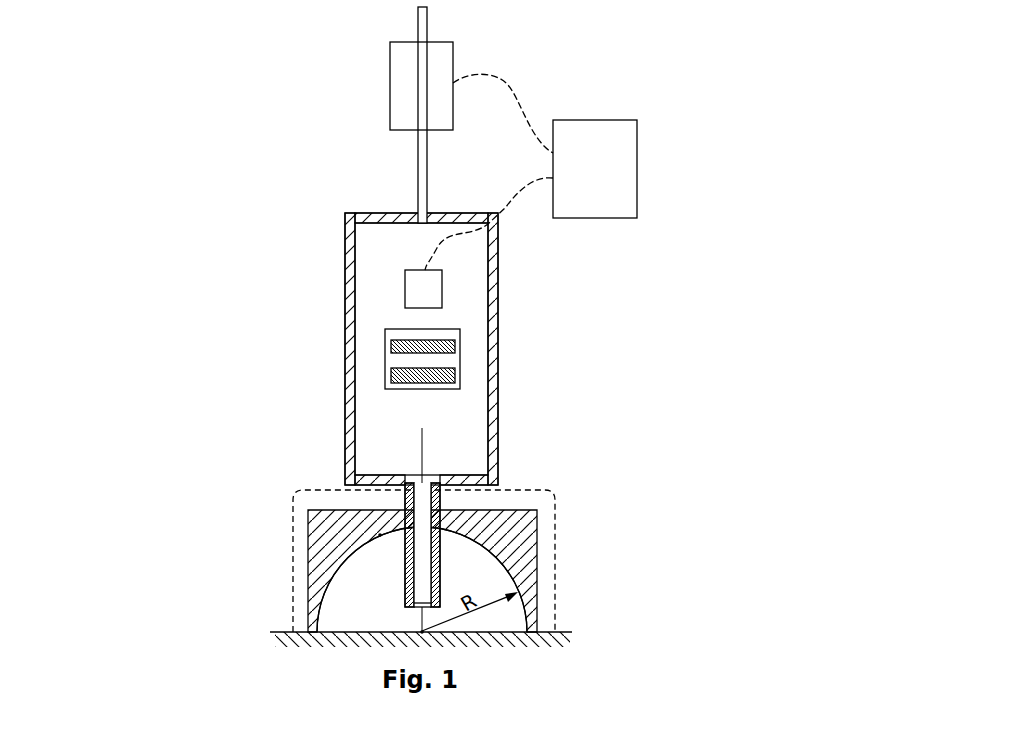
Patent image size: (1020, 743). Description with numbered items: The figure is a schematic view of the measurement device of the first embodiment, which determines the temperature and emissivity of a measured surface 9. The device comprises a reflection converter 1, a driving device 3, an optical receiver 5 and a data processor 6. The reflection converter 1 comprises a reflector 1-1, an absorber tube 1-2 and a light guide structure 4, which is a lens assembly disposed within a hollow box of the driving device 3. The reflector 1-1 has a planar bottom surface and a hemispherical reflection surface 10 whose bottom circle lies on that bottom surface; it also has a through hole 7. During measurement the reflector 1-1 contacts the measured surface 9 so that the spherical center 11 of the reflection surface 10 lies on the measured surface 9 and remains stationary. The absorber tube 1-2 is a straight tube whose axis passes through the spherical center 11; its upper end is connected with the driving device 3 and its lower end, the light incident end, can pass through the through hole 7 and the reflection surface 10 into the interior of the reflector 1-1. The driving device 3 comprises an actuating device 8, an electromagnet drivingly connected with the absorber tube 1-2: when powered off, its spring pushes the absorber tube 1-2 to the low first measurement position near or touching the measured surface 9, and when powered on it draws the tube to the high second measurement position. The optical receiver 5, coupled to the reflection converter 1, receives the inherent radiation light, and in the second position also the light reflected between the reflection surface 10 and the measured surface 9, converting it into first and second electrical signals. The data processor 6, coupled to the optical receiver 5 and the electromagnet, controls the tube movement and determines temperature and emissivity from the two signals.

The reflection converter 1 is at (552, 500).
The reflector 1-1 is at (523, 538).
The absorber tube 1-2 is at (436, 556).
The driving device 3 is at (498, 324).
The light guide structure 4 is at (460, 368).
The optical receiver 5 is at (442, 278).
The data processor 6 is at (617, 120).
The through hole 7 is at (407, 520).
The actuating device 8 is at (390, 85).
The measured surface 9 is at (275, 632).
The reflection surface 10 is at (380, 535).
The spherical center 11 is at (422, 632).